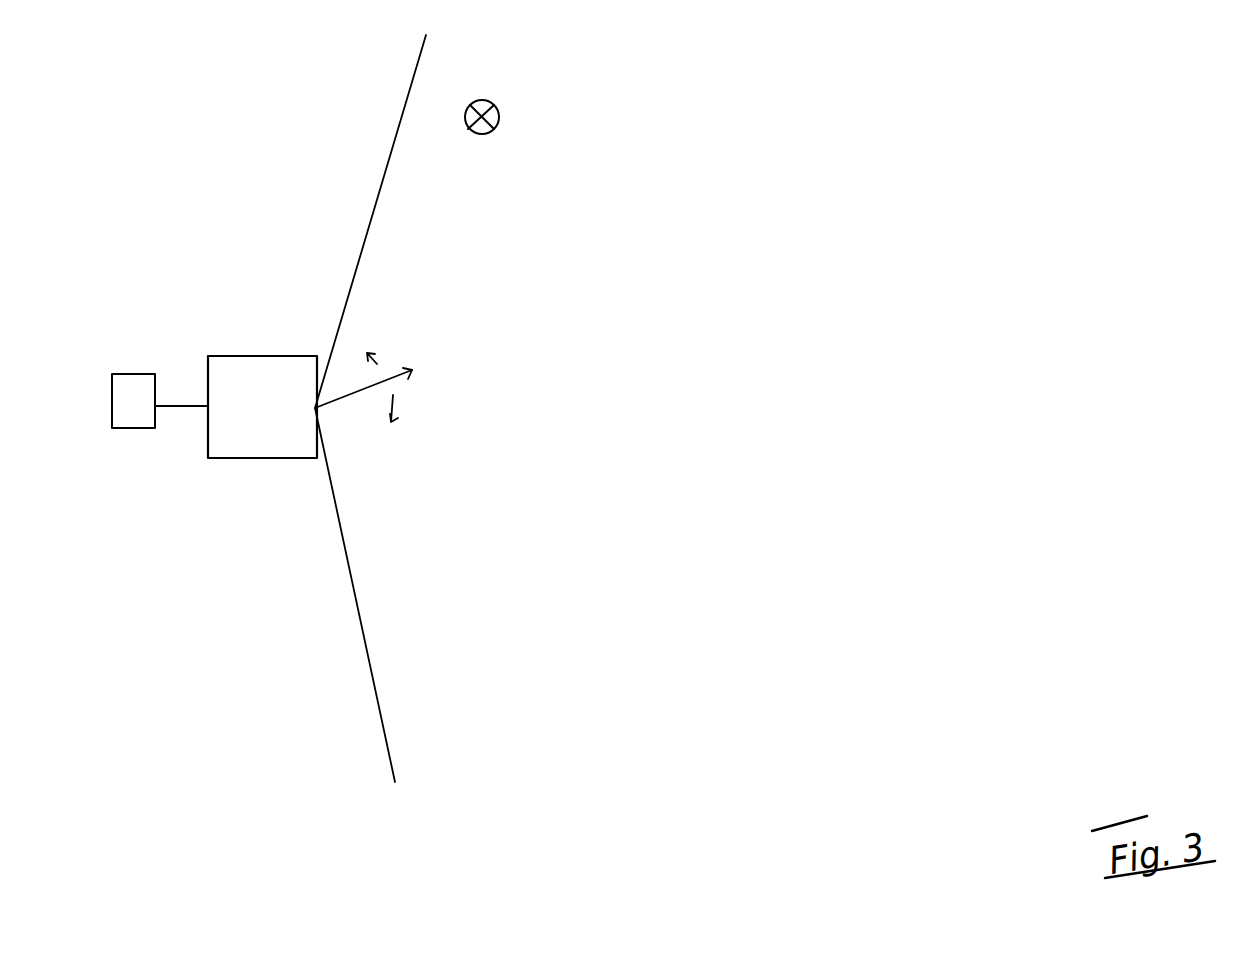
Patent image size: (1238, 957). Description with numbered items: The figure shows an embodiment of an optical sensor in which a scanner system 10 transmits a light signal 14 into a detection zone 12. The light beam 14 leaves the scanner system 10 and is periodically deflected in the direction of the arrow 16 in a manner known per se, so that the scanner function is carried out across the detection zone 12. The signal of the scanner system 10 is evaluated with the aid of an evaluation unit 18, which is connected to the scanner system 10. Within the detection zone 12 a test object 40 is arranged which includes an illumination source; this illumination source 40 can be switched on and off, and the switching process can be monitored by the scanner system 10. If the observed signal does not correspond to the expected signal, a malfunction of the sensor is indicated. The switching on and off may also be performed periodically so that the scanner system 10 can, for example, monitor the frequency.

The scanner system 10 is at (272, 373).
The detection zone 12 is at (432, 606).
The light signal 14 is at (356, 392).
The arrow 16 is at (393, 406).
The evaluation unit 18 is at (133, 408).
The test object 40 is at (493, 101).